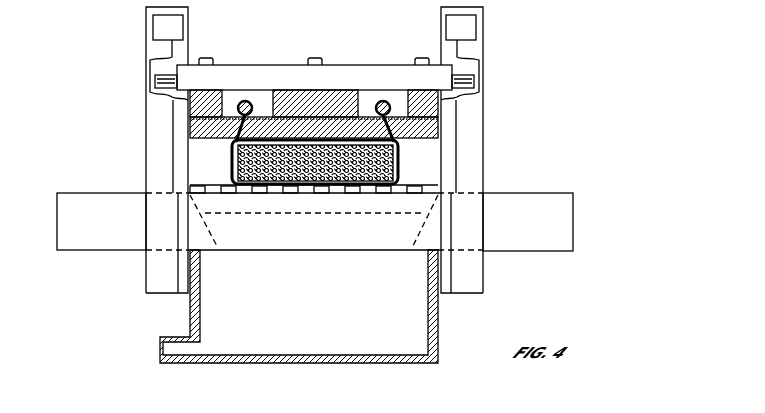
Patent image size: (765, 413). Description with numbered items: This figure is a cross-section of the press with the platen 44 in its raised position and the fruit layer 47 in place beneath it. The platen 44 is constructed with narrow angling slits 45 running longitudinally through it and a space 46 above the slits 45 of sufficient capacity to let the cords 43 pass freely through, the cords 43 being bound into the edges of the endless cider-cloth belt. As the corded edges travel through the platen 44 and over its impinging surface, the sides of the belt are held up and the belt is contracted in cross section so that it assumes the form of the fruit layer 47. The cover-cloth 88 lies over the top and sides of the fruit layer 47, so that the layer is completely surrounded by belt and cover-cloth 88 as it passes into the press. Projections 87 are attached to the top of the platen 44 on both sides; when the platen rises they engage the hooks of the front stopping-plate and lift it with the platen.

The cords 43 is at (248, 107).
The platen 44 is at (190, 136).
The angling slits 45 is at (233, 139).
The space 46 is at (245, 98).
The fruit layer 47 is at (387, 170).
The projections 87 is at (156, 81).
The cover-cloth 88 is at (233, 163).